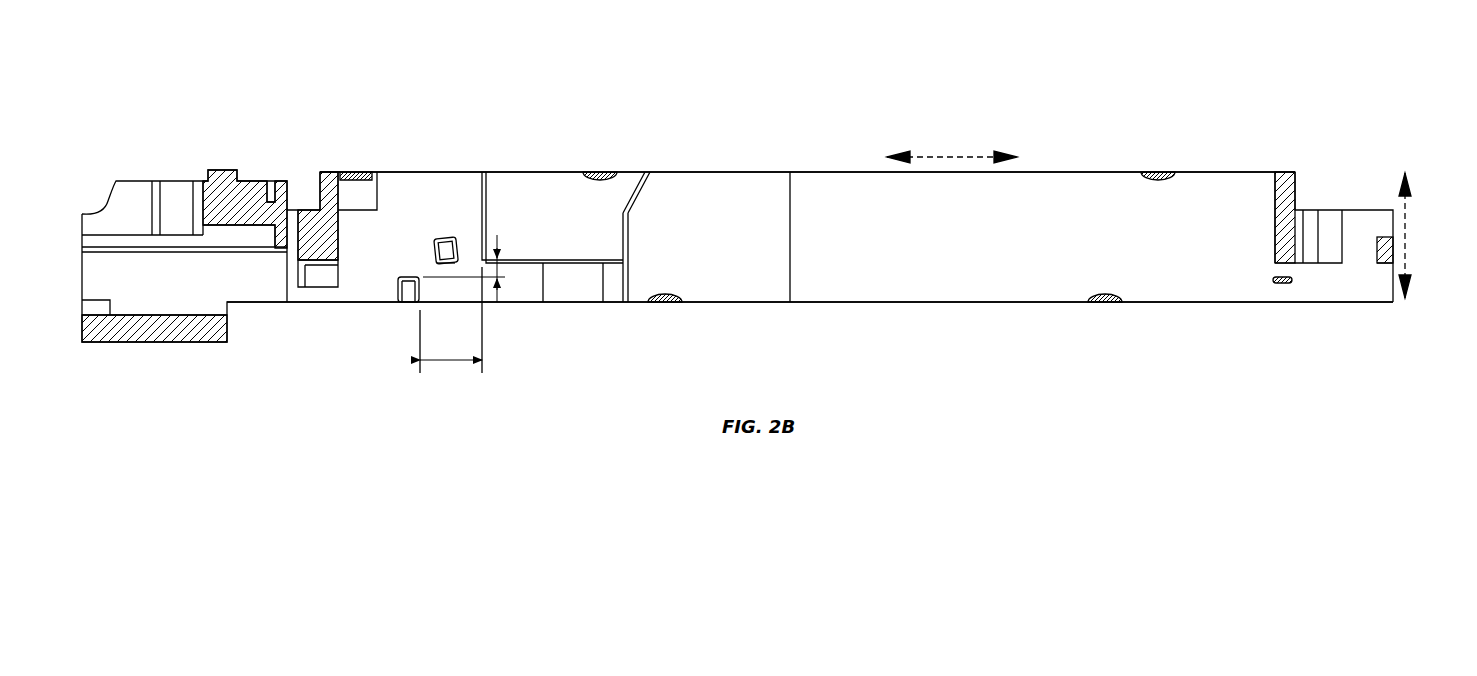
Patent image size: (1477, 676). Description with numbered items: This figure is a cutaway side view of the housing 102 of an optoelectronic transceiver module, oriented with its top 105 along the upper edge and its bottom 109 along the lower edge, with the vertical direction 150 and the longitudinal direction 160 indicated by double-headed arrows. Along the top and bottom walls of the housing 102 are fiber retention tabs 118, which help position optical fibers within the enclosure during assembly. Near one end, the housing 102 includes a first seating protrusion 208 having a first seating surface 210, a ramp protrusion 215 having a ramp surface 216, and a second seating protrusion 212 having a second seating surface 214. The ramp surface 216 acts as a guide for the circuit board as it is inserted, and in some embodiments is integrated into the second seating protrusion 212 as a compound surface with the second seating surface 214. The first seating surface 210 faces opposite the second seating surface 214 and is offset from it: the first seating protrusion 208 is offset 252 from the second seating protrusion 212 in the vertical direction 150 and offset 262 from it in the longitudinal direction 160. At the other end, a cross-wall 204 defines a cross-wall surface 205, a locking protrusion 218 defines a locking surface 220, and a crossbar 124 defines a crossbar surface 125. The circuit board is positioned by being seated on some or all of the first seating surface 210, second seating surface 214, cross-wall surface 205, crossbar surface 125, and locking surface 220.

The housing 102 is at (1390, 73).
The top 105 is at (812, 121).
The bottom 109 is at (963, 319).
The fiber retention tabs 118 is at (353, 172).
The crossbar 124 is at (1385, 237).
The crossbar surface 125 is at (1385, 266).
The vertical direction 150 is at (1407, 237).
The longitudinal direction 160 is at (935, 157).
The cross-wall 204 is at (1285, 172).
The cross-wall surface 205 is at (1293, 266).
The first seating protrusion 208 is at (405, 295).
The first seating surface 210 is at (406, 268).
The second seating protrusion 212 is at (528, 172).
The second seating surface 214 is at (563, 266).
The ramp protrusion 215 is at (445, 238).
The ramp surface 216 is at (443, 266).
The locking protrusion 218 is at (1283, 285).
The locking surface 220 is at (1278, 276).
The offset 252 is at (503, 273).
The offset 262 is at (452, 362).